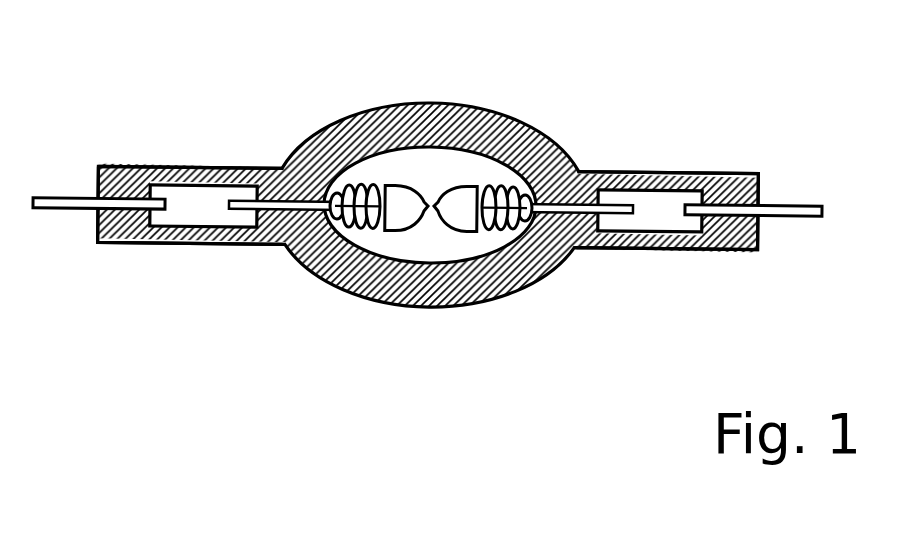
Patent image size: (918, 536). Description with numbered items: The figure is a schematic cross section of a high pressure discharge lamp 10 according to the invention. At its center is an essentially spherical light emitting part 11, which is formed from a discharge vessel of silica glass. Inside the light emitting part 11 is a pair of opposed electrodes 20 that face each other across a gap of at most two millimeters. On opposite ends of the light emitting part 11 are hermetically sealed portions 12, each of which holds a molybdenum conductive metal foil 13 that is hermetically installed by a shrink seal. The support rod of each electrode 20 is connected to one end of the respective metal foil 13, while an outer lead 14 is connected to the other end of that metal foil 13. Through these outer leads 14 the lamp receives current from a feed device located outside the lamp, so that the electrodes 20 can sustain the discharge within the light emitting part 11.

The high pressure discharge lamp 10 is at (530, 115).
The light emitting part 11 is at (438, 313).
The hermetically sealed portion 12 is at (198, 255).
The metal foil 13 is at (187, 192).
The outer lead 14 is at (65, 190).
The electrode 20 is at (365, 175).